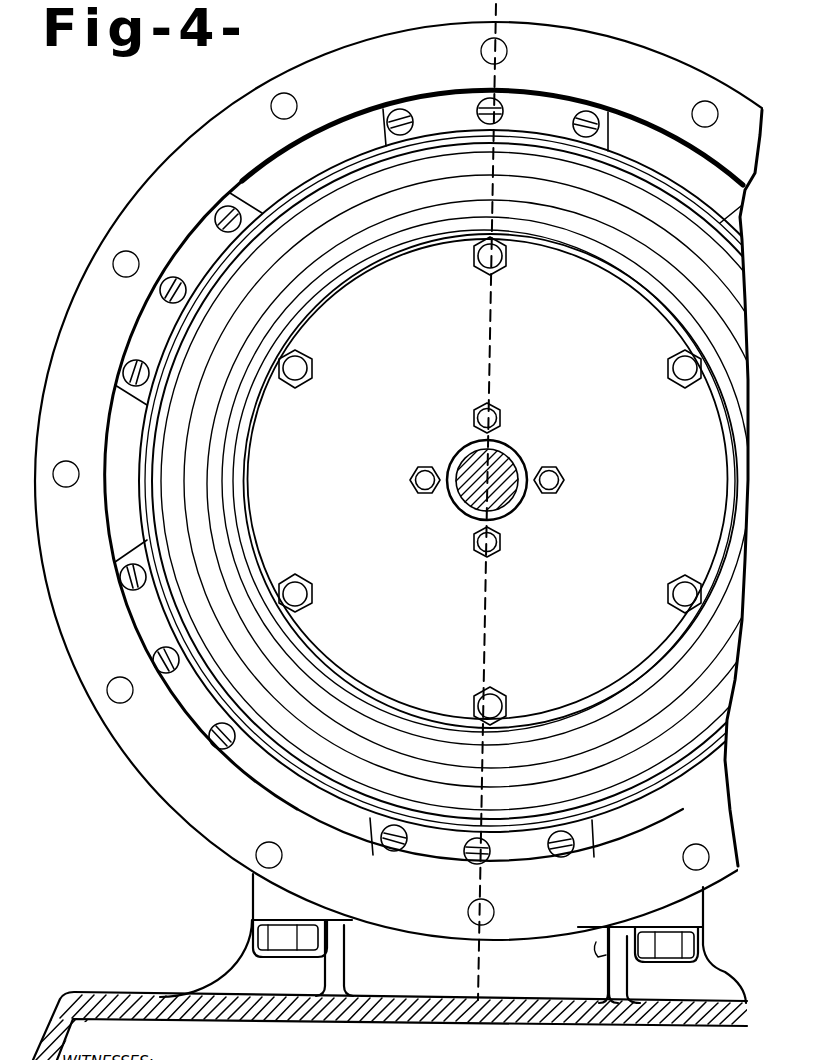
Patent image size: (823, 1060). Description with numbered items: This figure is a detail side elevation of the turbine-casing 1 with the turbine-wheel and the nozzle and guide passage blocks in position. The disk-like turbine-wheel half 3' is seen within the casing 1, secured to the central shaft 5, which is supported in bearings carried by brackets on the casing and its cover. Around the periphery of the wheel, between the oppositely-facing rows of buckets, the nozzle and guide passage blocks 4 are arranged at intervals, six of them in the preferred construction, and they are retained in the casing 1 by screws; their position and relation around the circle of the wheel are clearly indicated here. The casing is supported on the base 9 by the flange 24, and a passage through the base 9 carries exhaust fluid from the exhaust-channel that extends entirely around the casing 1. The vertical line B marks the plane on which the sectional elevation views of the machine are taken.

The turbine-casing 1 is at (169, 155).
The nozzle and guide passage block 4 is at (384, 120).
The turbine-wheel half 3' is at (487, 481).
The shaft 5 is at (505, 468).
The flange 24 is at (252, 884).
The base 9 is at (217, 990).
The section line B B is at (499, 501).